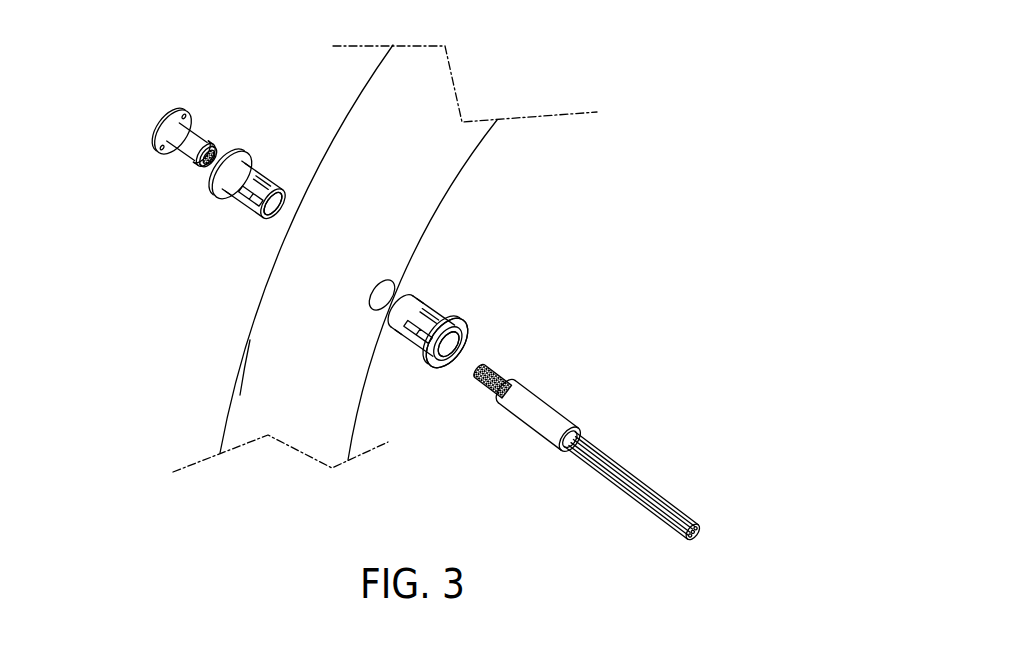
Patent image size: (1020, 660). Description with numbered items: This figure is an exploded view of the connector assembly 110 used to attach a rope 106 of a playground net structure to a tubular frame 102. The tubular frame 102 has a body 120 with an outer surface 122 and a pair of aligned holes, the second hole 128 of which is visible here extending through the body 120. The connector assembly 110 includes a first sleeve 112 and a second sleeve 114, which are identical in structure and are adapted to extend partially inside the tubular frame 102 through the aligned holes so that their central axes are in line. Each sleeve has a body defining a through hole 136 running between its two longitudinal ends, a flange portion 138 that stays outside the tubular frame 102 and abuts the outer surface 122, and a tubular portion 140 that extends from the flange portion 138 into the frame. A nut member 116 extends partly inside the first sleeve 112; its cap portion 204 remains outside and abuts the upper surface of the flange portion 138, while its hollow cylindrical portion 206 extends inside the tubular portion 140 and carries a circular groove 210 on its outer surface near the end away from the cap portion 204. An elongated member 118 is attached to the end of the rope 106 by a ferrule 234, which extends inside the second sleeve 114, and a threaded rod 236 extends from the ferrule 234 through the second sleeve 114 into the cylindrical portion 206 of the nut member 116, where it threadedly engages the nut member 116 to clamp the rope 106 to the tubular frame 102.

The tubular frame 102 is at (463, 165).
The rope 106 is at (628, 477).
The connector assembly 110 is at (144, 110).
The first sleeve 112 is at (256, 182).
The second sleeve 114 is at (442, 312).
The nut member 116 is at (200, 130).
The elongated member 118 is at (547, 423).
The body 120 is at (270, 348).
The outer surface 122 is at (360, 264).
The second hole 128 is at (383, 309).
The through hole 136 is at (272, 222).
The flange portion 138 is at (215, 185).
The tubular portion 140 is at (222, 200).
The cap portion 204 is at (155, 138).
The hollow cylindrical portion 206 is at (168, 153).
The groove 210 is at (210, 140).
The ferrule 234 is at (562, 422).
The threaded rod 236 is at (500, 372).